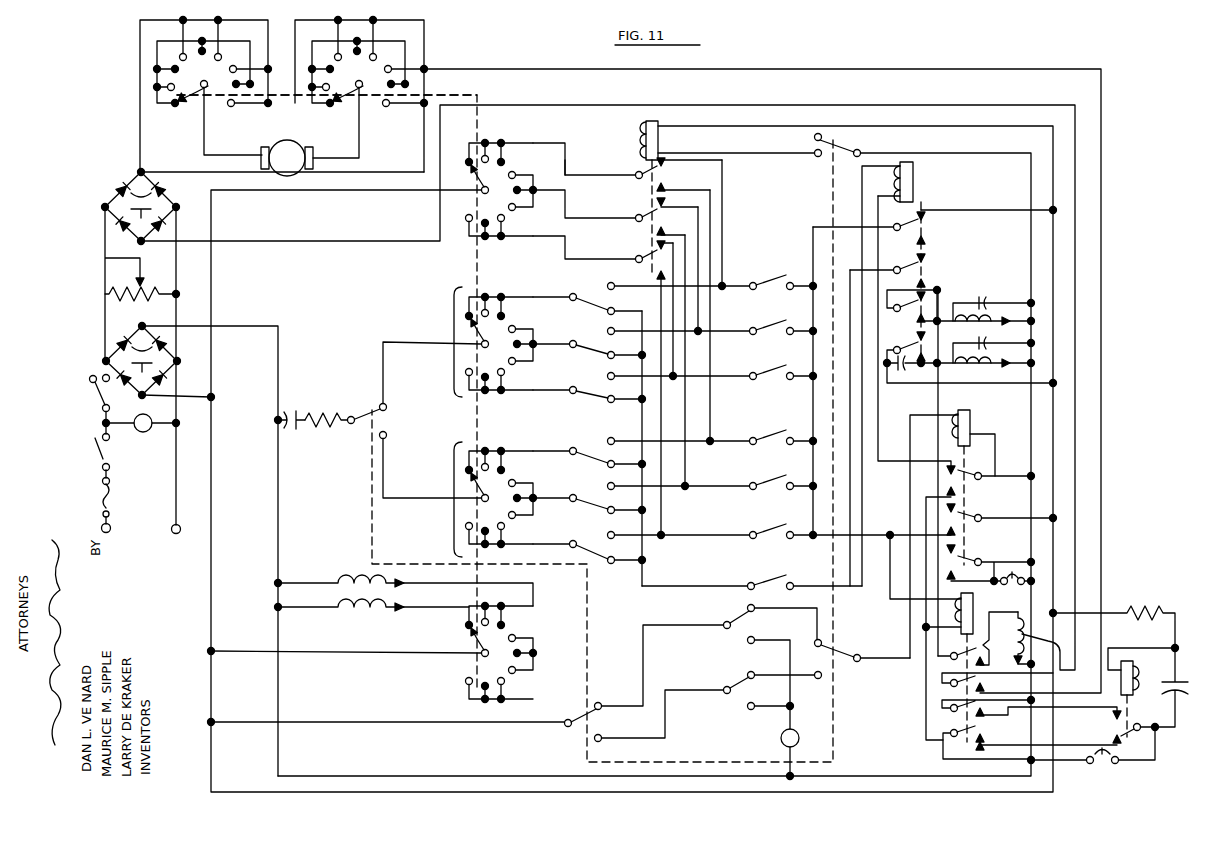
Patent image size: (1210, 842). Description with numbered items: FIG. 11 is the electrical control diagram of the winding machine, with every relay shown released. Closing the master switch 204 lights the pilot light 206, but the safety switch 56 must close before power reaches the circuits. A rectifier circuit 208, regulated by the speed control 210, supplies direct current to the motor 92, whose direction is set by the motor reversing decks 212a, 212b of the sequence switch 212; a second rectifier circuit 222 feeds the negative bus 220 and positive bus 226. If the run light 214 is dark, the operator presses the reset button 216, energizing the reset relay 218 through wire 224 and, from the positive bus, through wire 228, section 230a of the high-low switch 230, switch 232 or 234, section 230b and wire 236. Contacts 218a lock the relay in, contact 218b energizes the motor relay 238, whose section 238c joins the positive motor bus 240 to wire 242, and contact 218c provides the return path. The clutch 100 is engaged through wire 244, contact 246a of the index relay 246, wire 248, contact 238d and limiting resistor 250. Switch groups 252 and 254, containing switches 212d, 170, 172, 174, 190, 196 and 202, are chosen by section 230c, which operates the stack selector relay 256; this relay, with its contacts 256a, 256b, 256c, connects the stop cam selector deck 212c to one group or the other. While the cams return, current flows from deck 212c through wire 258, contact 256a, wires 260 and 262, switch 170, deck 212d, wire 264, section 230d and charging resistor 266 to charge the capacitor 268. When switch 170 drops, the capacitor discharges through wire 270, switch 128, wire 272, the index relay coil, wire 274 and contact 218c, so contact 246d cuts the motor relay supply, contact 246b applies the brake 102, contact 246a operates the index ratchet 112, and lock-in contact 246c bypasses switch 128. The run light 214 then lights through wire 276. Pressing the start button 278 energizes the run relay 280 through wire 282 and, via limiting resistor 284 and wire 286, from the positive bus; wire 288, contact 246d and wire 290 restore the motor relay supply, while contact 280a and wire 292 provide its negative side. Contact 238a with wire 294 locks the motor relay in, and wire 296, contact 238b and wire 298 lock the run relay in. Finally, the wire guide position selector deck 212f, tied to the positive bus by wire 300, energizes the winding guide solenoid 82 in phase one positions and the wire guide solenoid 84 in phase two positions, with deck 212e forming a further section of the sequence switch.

The motor reversing deck 212a is at (137, 65).
The motor reversing deck 212b is at (431, 29).
The stop cam selector deck 212c is at (511, 157).
The deck of sequence switch 212d is at (511, 311).
The relay switch section 212e is at (511, 467).
The wire guide position selector deck 212f is at (513, 621).
The sequence switch 212 is at (479, 95).
The motor 92 is at (285, 144).
The rectifier circuit 208 is at (101, 194).
The speed control 210 is at (138, 280).
The rectifier circuit 222 is at (99, 343).
The safety switch 56 is at (92, 395).
The pilot light 206 is at (143, 436).
The master switch 204 is at (97, 460).
The positive bus 226 is at (213, 516).
The negative bus 220 is at (980, 153).
The positive motor bus 240 is at (620, 105).
The wire 242 is at (870, 70).
The wire 228 is at (342, 722).
The wire 300 is at (372, 652).
The winding guide solenoid 82 is at (350, 577).
The wire guide solenoid 84 is at (360, 606).
The wire 264 is at (383, 344).
The section of high-low switch 230d is at (388, 418).
The capacitor 268 is at (288, 410).
The charging current limiting resistor 266 is at (318, 428).
The switch group 252 is at (454, 332).
The switch group 254 is at (454, 533).
The wire 258 is at (567, 162).
The stack selector relay 256 is at (660, 139).
The contact of stack selector relay 256a is at (665, 175).
The relay contact 256b is at (652, 212).
The relay contact 256c is at (652, 252).
The wire 262 is at (627, 287).
The wire 260 is at (724, 190).
The switch 170 is at (606, 303).
The switch 172 is at (590, 340).
The switch 174 is at (590, 388).
The switch 190 is at (775, 273).
The switch 196 is at (765, 322).
The switch 202 is at (765, 367).
The wire 290 is at (785, 430).
The switch 128 is at (765, 583).
The wire 270 is at (656, 588).
The section of high-low switch 230a is at (574, 712).
The switch 232 is at (727, 620).
The switch 234 is at (731, 684).
The wire 276 is at (795, 700).
The run light 214 is at (780, 740).
The section of high-low switch 230b is at (843, 650).
The section of high-low switch 230c is at (850, 152).
The high-low or stack selector switch 230 is at (830, 190).
The wire 272 is at (860, 204).
The index relay 246 is at (915, 182).
The contact of index relay 246a is at (905, 378).
The contact of index relay 246b is at (925, 295).
The lock-in contact 246c is at (925, 265).
The contact of index relay 246d is at (922, 215).
The wire 288 is at (975, 211).
The brake 102 is at (1012, 272).
The index ratchet 112 is at (1022, 332).
The wire 244 is at (1058, 386).
The reset relay 218 is at (968, 410).
The wire 224 is at (983, 430).
The contacts of reset relay 218a is at (982, 558).
The contact of reset relay 218b is at (982, 515).
The contact of reset relay 218c is at (982, 472).
The wire 274 is at (878, 468).
The wire 248 is at (926, 498).
The reset button 216 is at (1030, 582).
The wire 236 is at (905, 614).
The motor relay 238 is at (975, 607).
The contact of motor relay 238a is at (946, 737).
The contact of motor relay 238b is at (946, 709).
The section of motor relay 238c is at (946, 685).
The contact of motor relay 238d is at (945, 652).
The limiting resistor 250 is at (988, 652).
The wire 296 is at (1000, 712).
The wire 294 is at (995, 762).
The clutch 100 is at (1060, 658).
The limiting resistor 284 is at (1132, 610).
The wire 286 is at (1160, 645).
The run relay 280 is at (1140, 665).
The wire 282 is at (1172, 712).
The contact of run relay 280a is at (1145, 735).
The wire 298 is at (1100, 708).
The wire 292 is at (1058, 750).
The start button 278 is at (1100, 762).